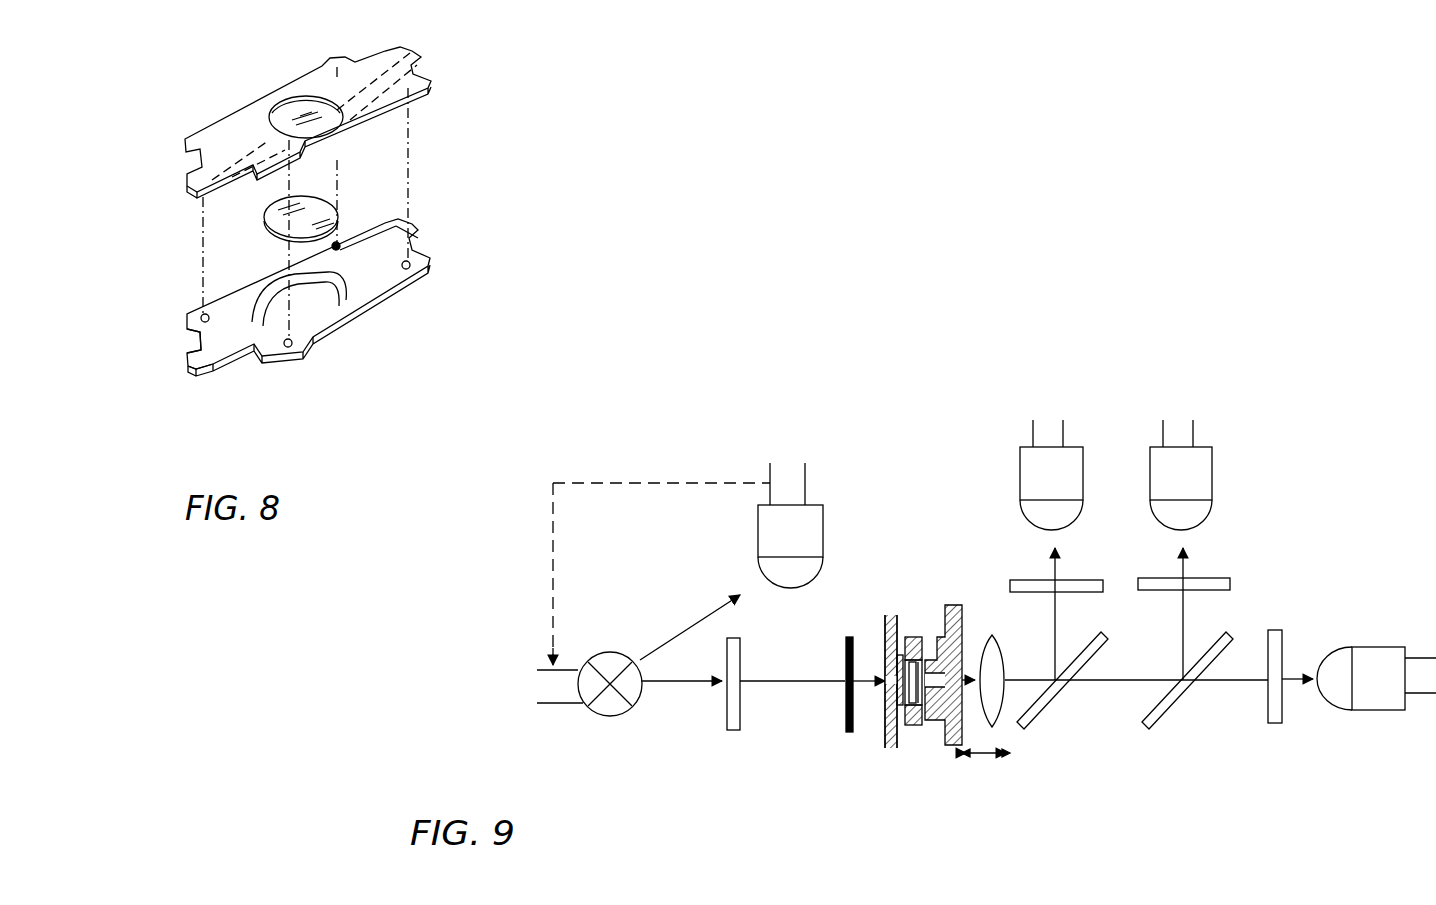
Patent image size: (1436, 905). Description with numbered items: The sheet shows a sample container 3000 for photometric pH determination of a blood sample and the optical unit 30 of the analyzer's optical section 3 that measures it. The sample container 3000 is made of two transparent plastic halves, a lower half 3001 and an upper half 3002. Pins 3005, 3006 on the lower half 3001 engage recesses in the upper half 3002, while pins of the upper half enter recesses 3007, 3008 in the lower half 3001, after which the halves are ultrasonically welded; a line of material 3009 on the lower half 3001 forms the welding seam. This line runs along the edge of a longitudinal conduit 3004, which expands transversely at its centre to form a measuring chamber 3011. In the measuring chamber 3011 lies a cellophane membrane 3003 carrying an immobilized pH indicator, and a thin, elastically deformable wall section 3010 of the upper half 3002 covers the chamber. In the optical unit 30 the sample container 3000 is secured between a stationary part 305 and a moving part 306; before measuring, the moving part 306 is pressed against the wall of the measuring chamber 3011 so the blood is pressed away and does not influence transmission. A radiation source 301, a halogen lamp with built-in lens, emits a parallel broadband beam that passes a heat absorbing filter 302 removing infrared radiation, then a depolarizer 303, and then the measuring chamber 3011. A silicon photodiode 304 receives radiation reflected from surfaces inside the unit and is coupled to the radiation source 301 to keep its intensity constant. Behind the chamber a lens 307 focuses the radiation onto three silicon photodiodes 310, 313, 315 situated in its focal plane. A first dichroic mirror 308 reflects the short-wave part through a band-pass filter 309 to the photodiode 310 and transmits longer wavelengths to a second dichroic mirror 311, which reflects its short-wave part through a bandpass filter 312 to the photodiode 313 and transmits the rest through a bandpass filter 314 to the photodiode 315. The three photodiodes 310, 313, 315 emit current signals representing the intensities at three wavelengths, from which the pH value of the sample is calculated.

In FIG. 8, the sample container 3000 is at (432, 134).
In FIG. 9, the sample container 3000 is at (914, 727).
In FIG. 8, the lower half of sample container 3001 is at (392, 286).
In FIG. 8, the upper half of sample container 3002 is at (327, 62).
In FIG. 8, the cellophane membrane 3003 is at (320, 208).
In FIG. 8, the longitudinal conduit 3004 is at (217, 376).
In FIG. 8, the pin 3005 is at (201, 316).
In FIG. 8, the pin 3006 is at (345, 240).
In FIG. 8, the recess 3007 is at (300, 347).
In FIG. 8, the recess 3008 is at (416, 260).
In FIG. 8, the line of material 3009 is at (193, 357).
In FIG. 8, the wall section 3010 is at (292, 100).
In FIG. 8, the measuring chamber 3011 is at (330, 300).
In FIG. 9, the measuring chamber 3011 is at (928, 650).
In FIG. 9, the optical unit 30 is at (1285, 486).
In FIG. 9, the optical section 3 is at (890, 630).
In FIG. 9, the radiation source 301 is at (610, 716).
In FIG. 9, the heat absorbing filter 302 is at (727, 722).
In FIG. 9, the depolarizer 303 is at (845, 717).
In FIG. 9, the silicon photodiode 304 is at (808, 518).
In FIG. 9, the stationary part 305 is at (892, 748).
In FIG. 9, the moving part 306 is at (958, 745).
In FIG. 9, the lens 307 is at (997, 718).
In FIG. 9, the dichroic mirror 308 is at (1043, 705).
In FIG. 9, the band-pass filter 309 is at (1068, 583).
In FIG. 9, the silicon photodiode 310 is at (1069, 455).
In FIG. 9, the dichroic mirror 311 is at (1160, 705).
In FIG. 9, the bandpass filter 312 is at (1218, 582).
In FIG. 9, the silicon photodiode 313 is at (1198, 455).
In FIG. 9, the bandpass filter 314 is at (1278, 710).
In FIG. 9, the silicon photodiode 315 is at (1373, 705).